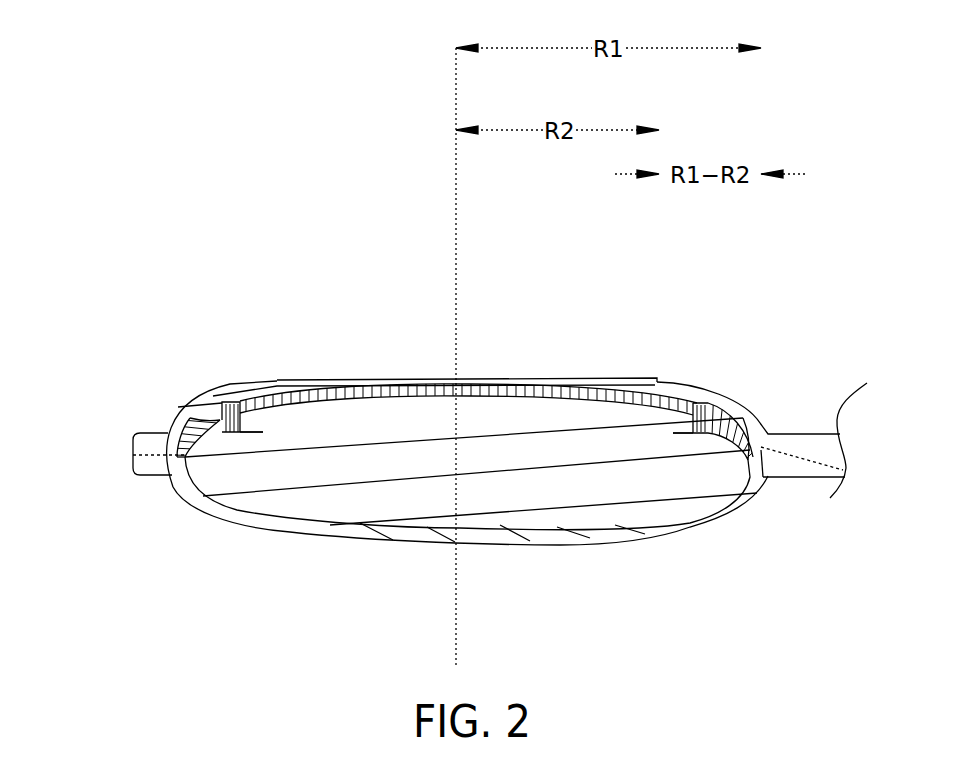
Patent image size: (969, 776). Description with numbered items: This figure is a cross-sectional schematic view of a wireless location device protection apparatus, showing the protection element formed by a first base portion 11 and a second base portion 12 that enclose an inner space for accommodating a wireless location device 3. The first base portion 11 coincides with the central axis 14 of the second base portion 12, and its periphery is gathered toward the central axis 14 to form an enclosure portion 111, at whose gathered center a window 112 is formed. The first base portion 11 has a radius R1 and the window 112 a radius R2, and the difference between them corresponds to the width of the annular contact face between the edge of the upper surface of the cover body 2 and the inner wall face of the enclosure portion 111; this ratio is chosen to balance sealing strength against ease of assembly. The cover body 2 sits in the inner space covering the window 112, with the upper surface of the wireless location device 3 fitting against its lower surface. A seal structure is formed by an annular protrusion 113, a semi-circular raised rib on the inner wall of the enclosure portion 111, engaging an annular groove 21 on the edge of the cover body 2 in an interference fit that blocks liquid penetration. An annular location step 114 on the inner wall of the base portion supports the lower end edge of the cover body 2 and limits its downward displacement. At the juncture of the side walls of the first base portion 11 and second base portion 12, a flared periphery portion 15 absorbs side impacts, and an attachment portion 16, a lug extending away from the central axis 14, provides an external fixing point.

The cover body 2 is at (487, 390).
The wireless location device 3 is at (540, 457).
The first base portion 11 is at (268, 286).
The second base portion 12 is at (247, 527).
The central axis 14 is at (455, 145).
The periphery portion 15 is at (135, 435).
The attachment portion 16 is at (798, 450).
The annular groove 21 is at (690, 530).
The enclosure portion 111 is at (193, 403).
The window 112 is at (353, 378).
The annular protrusion 113 is at (690, 530).
The annular location step 114 is at (183, 457).